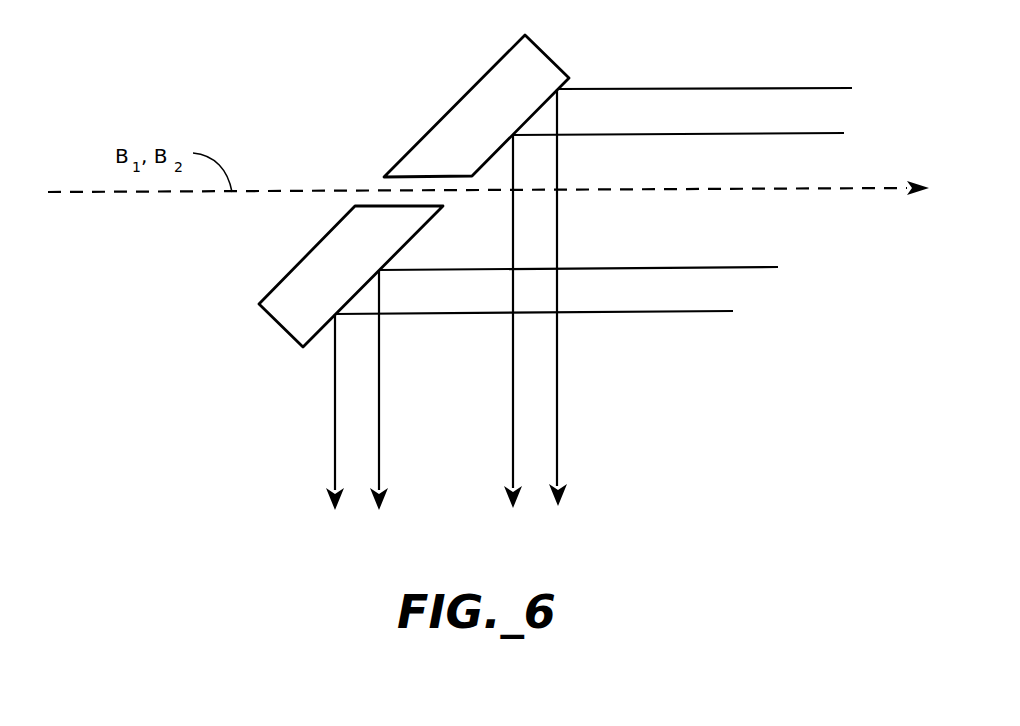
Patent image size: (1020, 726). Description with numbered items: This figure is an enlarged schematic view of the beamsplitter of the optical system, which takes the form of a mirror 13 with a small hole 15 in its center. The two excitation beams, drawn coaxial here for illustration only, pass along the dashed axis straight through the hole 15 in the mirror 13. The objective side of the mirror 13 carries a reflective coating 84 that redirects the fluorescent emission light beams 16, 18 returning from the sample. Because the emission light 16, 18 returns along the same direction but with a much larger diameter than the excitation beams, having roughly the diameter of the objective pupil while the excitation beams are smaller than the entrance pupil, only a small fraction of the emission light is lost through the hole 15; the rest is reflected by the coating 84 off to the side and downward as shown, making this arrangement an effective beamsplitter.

The mirror 13 is at (460, 95).
The hole 15 is at (364, 170).
The emission light beam 16 is at (735, 106).
The emission light beam 18 is at (684, 292).
The reflective coating 84 is at (310, 344).